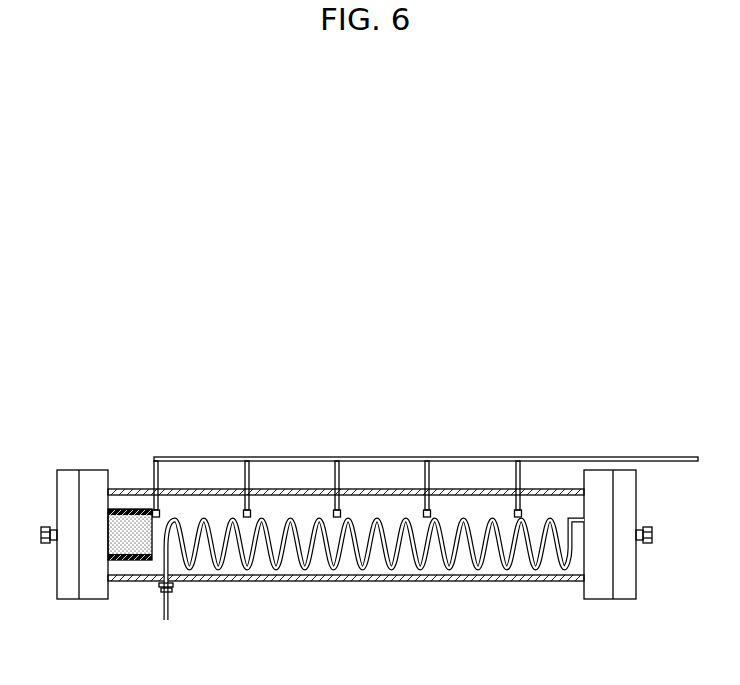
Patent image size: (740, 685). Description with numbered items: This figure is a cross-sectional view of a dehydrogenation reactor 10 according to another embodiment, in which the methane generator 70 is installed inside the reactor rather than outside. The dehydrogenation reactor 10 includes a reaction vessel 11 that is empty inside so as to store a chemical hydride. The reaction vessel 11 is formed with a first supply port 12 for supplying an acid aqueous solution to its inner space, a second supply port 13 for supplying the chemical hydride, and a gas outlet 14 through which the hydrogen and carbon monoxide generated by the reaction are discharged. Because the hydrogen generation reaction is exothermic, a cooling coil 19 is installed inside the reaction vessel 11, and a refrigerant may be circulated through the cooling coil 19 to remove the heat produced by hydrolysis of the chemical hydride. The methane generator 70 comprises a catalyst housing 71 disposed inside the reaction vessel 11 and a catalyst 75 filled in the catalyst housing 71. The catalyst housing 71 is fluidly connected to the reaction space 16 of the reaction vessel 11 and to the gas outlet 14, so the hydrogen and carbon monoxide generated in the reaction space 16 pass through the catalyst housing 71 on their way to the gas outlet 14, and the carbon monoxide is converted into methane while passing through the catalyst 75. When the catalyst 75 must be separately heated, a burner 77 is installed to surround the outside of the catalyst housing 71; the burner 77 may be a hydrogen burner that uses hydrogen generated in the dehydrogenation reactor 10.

The dehydrogenation reactor 10 is at (382, 380).
The reaction vessel 11 is at (320, 582).
The first supply port 12 is at (528, 458).
The second supply port 13 is at (647, 545).
The gas outlet 14 is at (42, 545).
The reaction space 16 is at (470, 570).
The cooling coil 19 is at (507, 573).
The methane generator 70 is at (200, 390).
The catalyst housing 71 is at (130, 510).
The catalyst 75 is at (117, 528).
The burner 77 is at (143, 510).